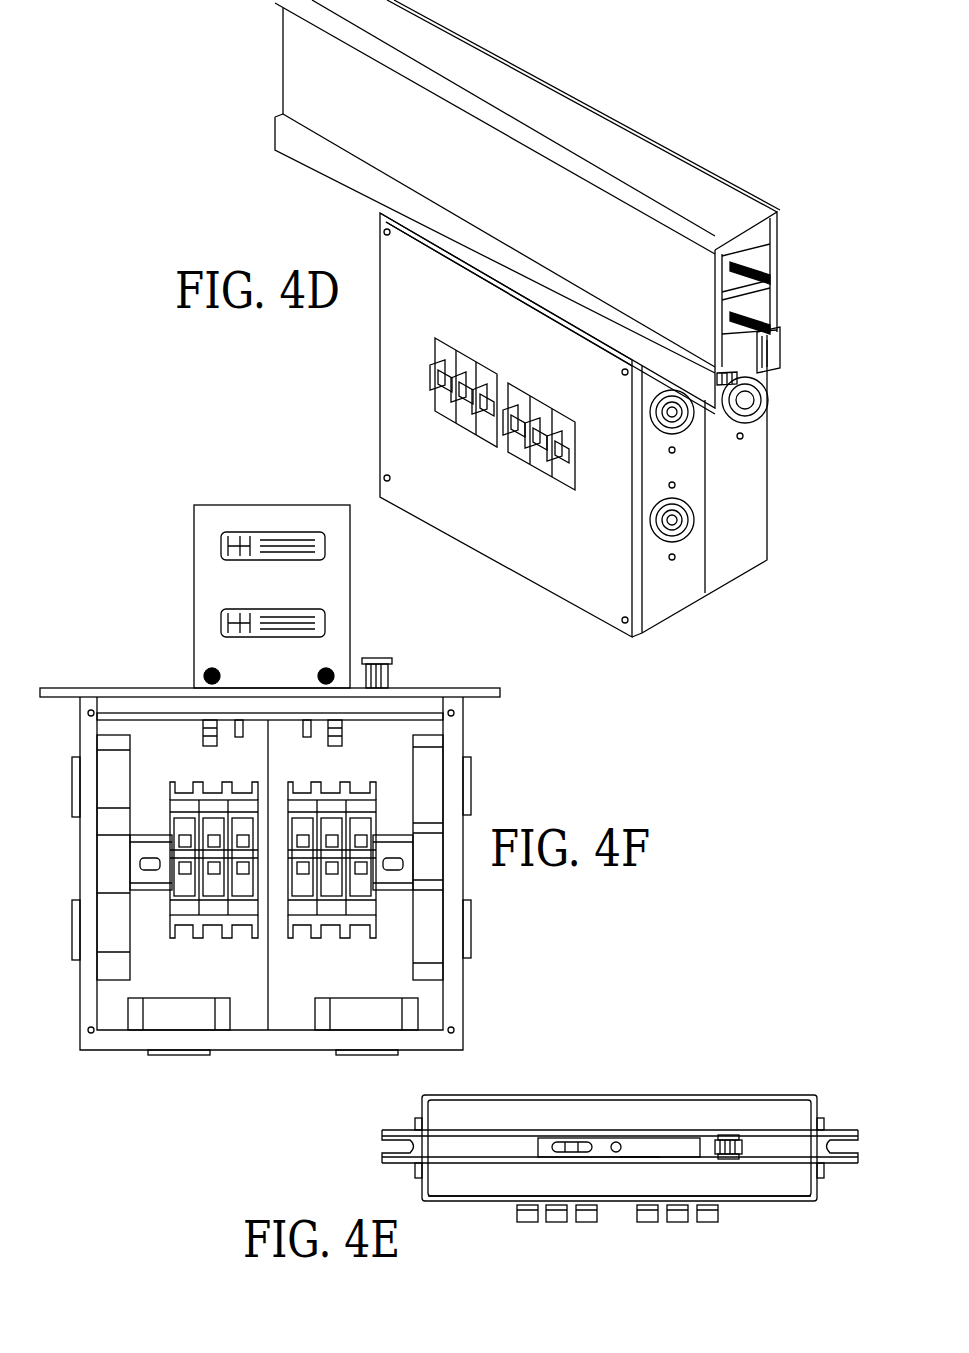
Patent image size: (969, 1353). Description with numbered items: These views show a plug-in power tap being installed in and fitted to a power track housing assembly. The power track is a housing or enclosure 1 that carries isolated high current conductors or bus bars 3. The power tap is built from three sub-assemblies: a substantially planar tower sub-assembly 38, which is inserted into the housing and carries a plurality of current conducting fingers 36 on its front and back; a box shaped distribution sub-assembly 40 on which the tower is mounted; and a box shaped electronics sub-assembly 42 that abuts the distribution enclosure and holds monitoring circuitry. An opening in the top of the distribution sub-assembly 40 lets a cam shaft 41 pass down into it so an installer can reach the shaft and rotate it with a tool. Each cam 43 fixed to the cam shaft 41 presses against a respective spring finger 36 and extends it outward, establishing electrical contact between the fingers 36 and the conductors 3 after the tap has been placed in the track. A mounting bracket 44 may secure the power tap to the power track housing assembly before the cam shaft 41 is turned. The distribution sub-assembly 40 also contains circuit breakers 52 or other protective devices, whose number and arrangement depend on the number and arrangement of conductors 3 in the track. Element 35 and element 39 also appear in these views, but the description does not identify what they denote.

In FIG. 4D, the housing or enclosure 1 is at (623, 163).
In FIG. 4D, the high current conductors or bus bars 3 is at (770, 270).
In FIG. 4F, the locking member 35 is at (385, 678).
In FIG. 4E, the locking member 35 is at (733, 1137).
In FIG. 4F, the current conducting fingers 36 is at (263, 547).
In FIG. 4E, the current conducting fingers 36 is at (640, 1160).
In FIG. 4F, the tower sub-assembly 38 is at (323, 577).
In FIG. 4E, the tower sub-assembly 38 is at (670, 1140).
In FIG. 4F, the mounting pins 39 is at (323, 672).
In FIG. 4D, the distribution sub-assembly 40 is at (672, 590).
In FIG. 4F, the distribution sub-assembly 40 is at (155, 690).
In FIG. 4E, the distribution sub-assembly 40 is at (790, 1190).
In FIG. 4F, the cam shaft 41 is at (273, 763).
In FIG. 4D, the electronics sub-assembly 42 is at (745, 483).
In FIG. 4E, the electronics sub-assembly 42 is at (793, 1115).
In FIG. 4E, the cam 43 is at (630, 1144).
In FIG. 4E, the mounting bracket 44 is at (395, 1130).
In FIG. 4D, the circuit breakers 52 is at (543, 463).
In FIG. 4F, the circuit breakers 52 is at (172, 893).
In FIG. 4E, the circuit breakers 52 is at (557, 1222).